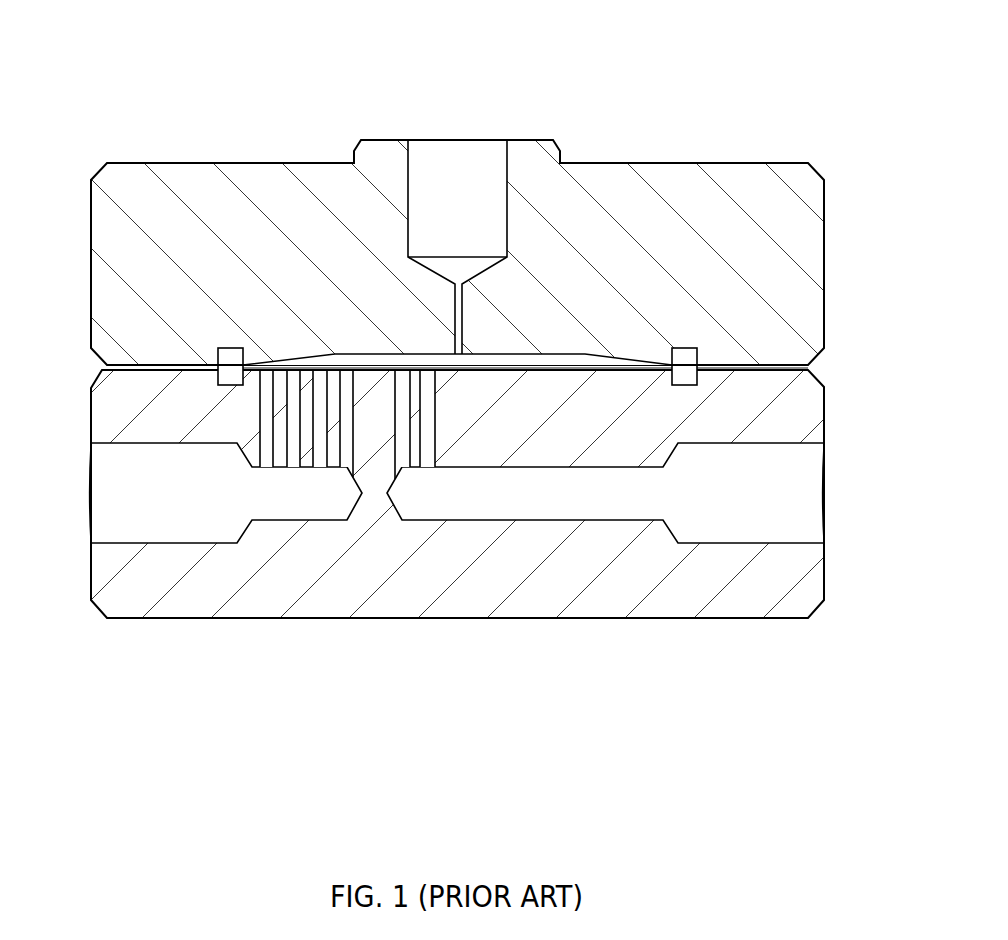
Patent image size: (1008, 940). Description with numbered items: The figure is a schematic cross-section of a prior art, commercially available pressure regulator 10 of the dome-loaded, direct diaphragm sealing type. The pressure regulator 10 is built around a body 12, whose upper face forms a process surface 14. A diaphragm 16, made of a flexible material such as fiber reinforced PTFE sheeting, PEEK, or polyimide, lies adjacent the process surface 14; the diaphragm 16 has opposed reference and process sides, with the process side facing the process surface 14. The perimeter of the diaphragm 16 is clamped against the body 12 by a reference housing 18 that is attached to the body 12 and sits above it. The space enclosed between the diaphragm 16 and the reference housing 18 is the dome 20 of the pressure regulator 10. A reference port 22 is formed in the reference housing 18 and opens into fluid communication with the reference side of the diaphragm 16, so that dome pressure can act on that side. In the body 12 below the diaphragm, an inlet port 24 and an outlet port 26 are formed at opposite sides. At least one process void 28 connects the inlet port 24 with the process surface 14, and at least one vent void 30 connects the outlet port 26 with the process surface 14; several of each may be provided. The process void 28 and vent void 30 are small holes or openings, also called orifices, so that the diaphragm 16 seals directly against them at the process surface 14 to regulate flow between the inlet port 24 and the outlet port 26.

The pressure regulator 10 is at (566, 46).
The body 12 is at (504, 500).
The process surface 14 is at (131, 378).
The diaphragm 16 is at (808, 367).
The reference housing 18 is at (501, 243).
The dome 20 is at (563, 348).
The reference port 22 is at (507, 152).
The inlet port 24 is at (122, 543).
The outlet port 26 is at (806, 543).
The process void 28 is at (287, 458).
The vent void 30 is at (435, 457).